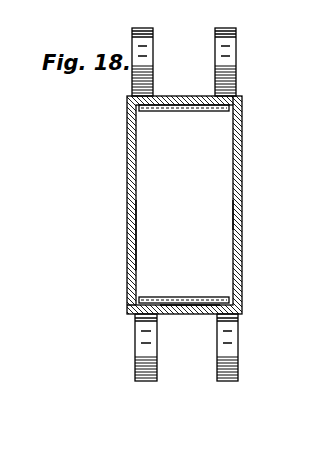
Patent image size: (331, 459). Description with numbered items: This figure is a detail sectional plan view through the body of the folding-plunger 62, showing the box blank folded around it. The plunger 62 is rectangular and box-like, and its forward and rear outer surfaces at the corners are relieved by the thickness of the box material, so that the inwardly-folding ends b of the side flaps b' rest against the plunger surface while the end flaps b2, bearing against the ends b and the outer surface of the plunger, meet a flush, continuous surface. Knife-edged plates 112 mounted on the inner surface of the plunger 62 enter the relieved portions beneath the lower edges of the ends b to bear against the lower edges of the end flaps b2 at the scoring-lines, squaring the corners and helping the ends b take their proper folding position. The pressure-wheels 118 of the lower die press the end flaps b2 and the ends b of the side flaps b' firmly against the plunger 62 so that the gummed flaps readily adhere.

The folding-plunger 62 is at (127, 216).
The knife-edged plates 112 is at (192, 112).
The pressure-wheels 118 is at (215, 57).
The inwardly-folding ends of the side flaps b is at (184, 209).
The side flaps b' is at (183, 235).
The end flaps b2 is at (200, 307).